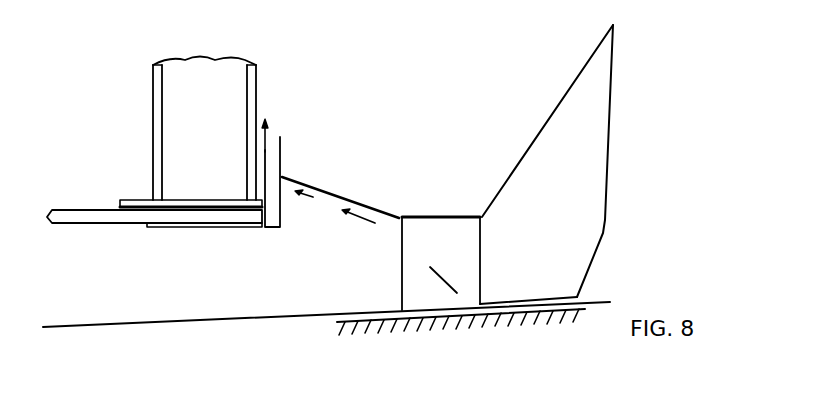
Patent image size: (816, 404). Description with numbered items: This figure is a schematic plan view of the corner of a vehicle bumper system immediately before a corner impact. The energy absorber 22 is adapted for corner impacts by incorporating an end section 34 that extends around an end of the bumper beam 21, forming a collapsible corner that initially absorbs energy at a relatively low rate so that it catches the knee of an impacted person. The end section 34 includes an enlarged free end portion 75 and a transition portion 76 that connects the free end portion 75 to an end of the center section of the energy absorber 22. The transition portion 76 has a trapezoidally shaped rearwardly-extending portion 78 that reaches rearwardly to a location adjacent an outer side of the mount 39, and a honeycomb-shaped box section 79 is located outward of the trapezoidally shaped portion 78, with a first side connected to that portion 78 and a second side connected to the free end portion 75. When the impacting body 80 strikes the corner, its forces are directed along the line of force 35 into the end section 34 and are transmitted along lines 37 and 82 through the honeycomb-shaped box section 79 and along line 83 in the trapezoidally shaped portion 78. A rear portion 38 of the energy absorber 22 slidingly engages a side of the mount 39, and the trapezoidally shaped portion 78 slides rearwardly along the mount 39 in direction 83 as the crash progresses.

The bumper beam 21 is at (93, 208).
The energy absorber 22 is at (190, 327).
The end section 34 is at (628, 146).
The line of force of corner impact 35 is at (468, 348).
The lines of energy absorption 37 is at (447, 287).
The rear portion 38 is at (284, 176).
The mount 39 is at (257, 88).
The free end portion 75 is at (558, 190).
The transition portion 76 is at (387, 200).
The trapezoidally shaped rearwardly-extending portion 78 is at (332, 195).
The honeycomb-shaped box section 79 is at (452, 250).
The impacting body 80 is at (543, 323).
The line of force transmission 82 is at (318, 200).
The direction of rearward sliding 83 is at (268, 137).